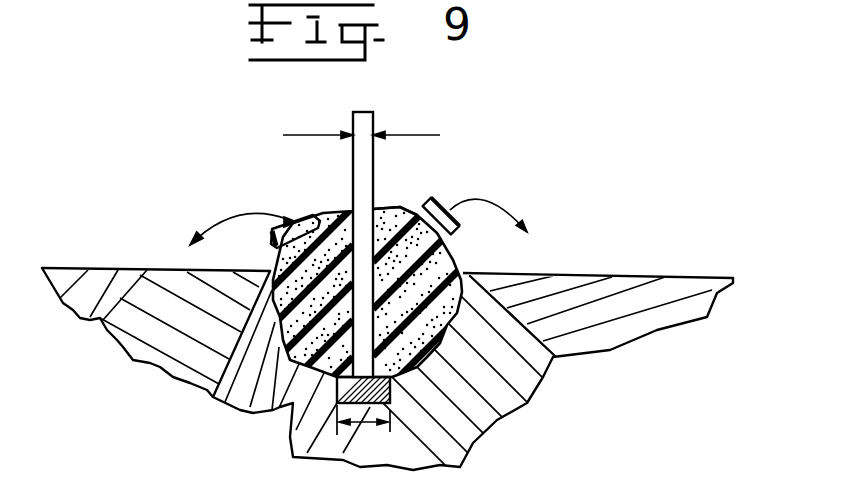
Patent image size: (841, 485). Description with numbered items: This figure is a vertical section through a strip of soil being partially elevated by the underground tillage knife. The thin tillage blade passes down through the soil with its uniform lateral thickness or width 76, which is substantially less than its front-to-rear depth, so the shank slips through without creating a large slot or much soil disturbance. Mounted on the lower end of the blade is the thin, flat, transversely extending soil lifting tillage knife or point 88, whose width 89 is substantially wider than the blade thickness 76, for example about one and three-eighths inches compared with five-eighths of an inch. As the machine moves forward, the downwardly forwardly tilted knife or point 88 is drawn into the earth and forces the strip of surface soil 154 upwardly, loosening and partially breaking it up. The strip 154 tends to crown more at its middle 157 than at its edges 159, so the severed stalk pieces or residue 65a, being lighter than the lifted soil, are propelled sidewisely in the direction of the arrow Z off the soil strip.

The lateral thickness or width 76 is at (416, 135).
The strip of surface soil 154 is at (322, 240).
The middle 157 is at (375, 210).
The severed stalk pieces or residue 65a is at (292, 221).
The direction of sidewise propulsion Z is at (503, 200).
The edges 159 is at (463, 273).
The soil lifting tillage knife or point 88 is at (330, 402).
The width of the tillage knife or point 89 is at (365, 435).